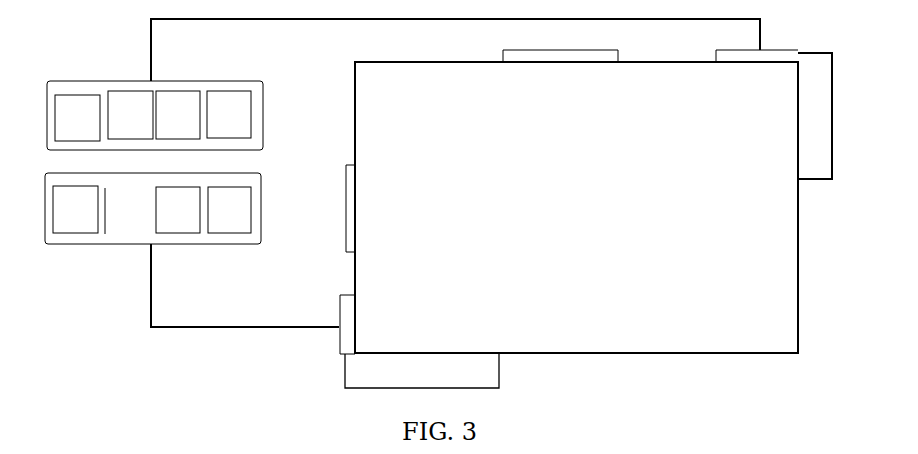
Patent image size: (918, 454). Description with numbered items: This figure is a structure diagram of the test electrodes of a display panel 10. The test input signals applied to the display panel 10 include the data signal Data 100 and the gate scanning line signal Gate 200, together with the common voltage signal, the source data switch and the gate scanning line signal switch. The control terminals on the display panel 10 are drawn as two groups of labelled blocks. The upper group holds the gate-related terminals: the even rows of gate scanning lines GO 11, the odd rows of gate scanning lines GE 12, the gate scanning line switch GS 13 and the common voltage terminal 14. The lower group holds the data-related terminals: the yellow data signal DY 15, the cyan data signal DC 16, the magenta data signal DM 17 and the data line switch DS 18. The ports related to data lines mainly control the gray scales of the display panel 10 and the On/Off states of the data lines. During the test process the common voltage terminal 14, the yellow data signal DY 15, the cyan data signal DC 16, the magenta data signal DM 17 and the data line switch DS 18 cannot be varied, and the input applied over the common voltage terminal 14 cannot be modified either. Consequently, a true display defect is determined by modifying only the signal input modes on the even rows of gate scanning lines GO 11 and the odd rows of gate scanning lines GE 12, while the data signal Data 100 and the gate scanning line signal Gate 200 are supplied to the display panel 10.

The display panel 10 is at (755, 256).
The even rows of gate scanning lines GO 11 is at (73, 95).
The odd rows of gate scanning lines GE 12 is at (135, 92).
The gate scanning line switch GS 13 is at (175, 92).
The common voltage Vcom 14 is at (237, 92).
The yellow data signal DY 15 is at (63, 233).
The cyan data signal DC 16 is at (115, 235).
The magenta data signal DM 17 is at (172, 233).
The data line switch DS 18 is at (250, 222).
The data signal Data 100 is at (216, 327).
The gate scanning line signal Gate 200 is at (300, 20).